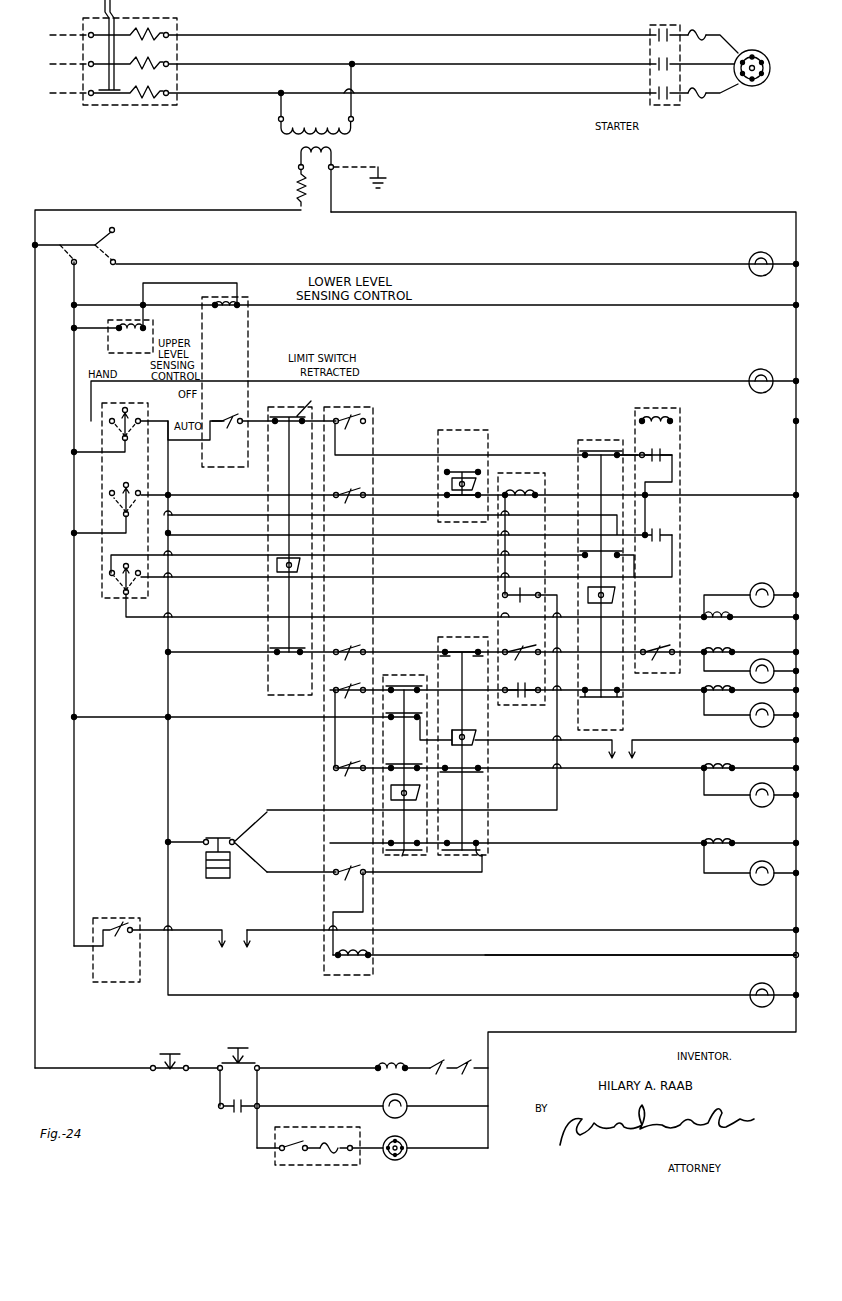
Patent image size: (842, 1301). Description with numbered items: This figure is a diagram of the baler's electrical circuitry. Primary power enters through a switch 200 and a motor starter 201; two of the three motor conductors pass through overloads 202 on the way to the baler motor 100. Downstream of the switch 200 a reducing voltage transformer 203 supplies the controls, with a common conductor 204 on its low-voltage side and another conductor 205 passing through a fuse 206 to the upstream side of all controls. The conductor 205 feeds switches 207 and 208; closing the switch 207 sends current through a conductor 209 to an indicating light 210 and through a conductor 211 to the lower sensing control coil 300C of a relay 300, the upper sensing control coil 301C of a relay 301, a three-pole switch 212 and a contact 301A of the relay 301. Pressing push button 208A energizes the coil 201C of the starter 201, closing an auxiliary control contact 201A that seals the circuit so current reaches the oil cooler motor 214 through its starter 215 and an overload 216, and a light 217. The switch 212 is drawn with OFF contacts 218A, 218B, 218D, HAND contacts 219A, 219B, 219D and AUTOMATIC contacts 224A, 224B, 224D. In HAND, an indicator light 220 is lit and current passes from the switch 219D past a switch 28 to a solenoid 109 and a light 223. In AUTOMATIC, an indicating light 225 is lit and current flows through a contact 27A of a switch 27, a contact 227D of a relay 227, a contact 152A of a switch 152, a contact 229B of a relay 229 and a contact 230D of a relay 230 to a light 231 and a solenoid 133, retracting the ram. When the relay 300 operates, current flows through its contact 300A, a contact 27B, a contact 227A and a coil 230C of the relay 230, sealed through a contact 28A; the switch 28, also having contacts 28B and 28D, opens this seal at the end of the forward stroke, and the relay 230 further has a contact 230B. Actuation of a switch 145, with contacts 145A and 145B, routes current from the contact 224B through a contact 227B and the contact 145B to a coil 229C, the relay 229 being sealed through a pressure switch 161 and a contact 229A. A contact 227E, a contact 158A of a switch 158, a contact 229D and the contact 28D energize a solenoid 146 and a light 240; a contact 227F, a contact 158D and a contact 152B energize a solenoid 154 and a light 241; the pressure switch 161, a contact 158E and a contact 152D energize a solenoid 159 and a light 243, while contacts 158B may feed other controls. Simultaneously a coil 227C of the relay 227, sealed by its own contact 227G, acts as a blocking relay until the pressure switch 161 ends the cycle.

The switch 200 is at (178, 26).
The motor starter 201 is at (671, 100).
The overloads 202 is at (704, 118).
The baler motor 100 is at (748, 88).
The reducing voltage transformer 203 is at (305, 122).
The common conductor 204 is at (533, 210).
The conductor 205 is at (299, 166).
The fuse 206 is at (298, 190).
The switch 207 is at (93, 234).
The conductor 209 is at (355, 264).
The indicating light 210 is at (763, 253).
The conductor 211 is at (74, 354).
The three pole switch 212 is at (104, 478).
The indicator light 220 is at (763, 370).
The lower level sensing control relay 300 is at (248, 300).
The contact 300A is at (243, 404).
The lower sensing electric control coil 300C is at (232, 288).
The upper level sensing control relay 301 is at (153, 332).
The contact 301A is at (118, 924).
The upper electric sensing control coil 301C is at (131, 306).
The selector switch contact 218A is at (152, 400).
The selector switch contact 218B is at (128, 474).
The selector switch contact 218D is at (126, 563).
The HAND position 219A is at (112, 418).
The hand contact 219B is at (110, 495).
The switch 219D is at (110, 575).
The AUTOMATIC position contact 224A is at (140, 418).
The contact 224B is at (140, 492).
The auto contact 224D is at (140, 576).
The switch 27 is at (294, 394).
The contact 27A is at (268, 649).
The contact 27B is at (314, 412).
The relay 227 is at (344, 397).
The contact 227A is at (348, 436).
The contact 227B is at (350, 492).
The coil 227C is at (368, 965).
The contact 227D is at (350, 649).
The contact 227E is at (350, 687).
The contact 227F is at (350, 765).
The contact 227G is at (350, 869).
The switch 145 is at (466, 424).
The limit switch contact 145A is at (446, 472).
The contact 145B is at (448, 522).
The relay 229 is at (520, 470).
The contact 229A is at (530, 588).
The contact 229B is at (522, 662).
The coil 229C is at (535, 490).
The contact 229D is at (522, 700).
The switch 28 is at (582, 442).
The contact 28A is at (606, 452).
The relay contact 28B is at (604, 558).
The contact 28D is at (608, 686).
The relay 230 is at (670, 408).
The relay contact 230B is at (660, 528).
The coil 230C is at (672, 425).
The contact 230D is at (655, 644).
The light 223 is at (766, 582).
The solenoid 109 is at (712, 610).
The solenoid 133 is at (712, 645).
The light 231 is at (779, 648).
The solenoid 146 is at (712, 697).
The light 240 is at (754, 728).
The switch 152 is at (470, 636).
The contact 152A is at (488, 646).
The contact 152B is at (470, 772).
The contact 152D is at (478, 856).
The switch 158 is at (398, 672).
The contact 158A is at (388, 696).
The contacts 158B is at (386, 728).
The contacts 158D is at (388, 774).
The contacts 158E is at (404, 858).
The solenoid 154 is at (712, 760).
The light 241 is at (750, 786).
The solenoid 159 is at (712, 835).
The light 243 is at (754, 881).
The pressure switch 161 is at (208, 822).
The indicating light 225 is at (760, 985).
The switch 208 is at (174, 1078).
The push button 208A is at (250, 1052).
The auxiliary control contact 201A is at (236, 1112).
The coil 201C is at (387, 1065).
The light 217 is at (382, 1099).
The starter 215 is at (322, 1132).
The overload 216 is at (322, 1158).
The oil cooler motor 214 is at (414, 1166).